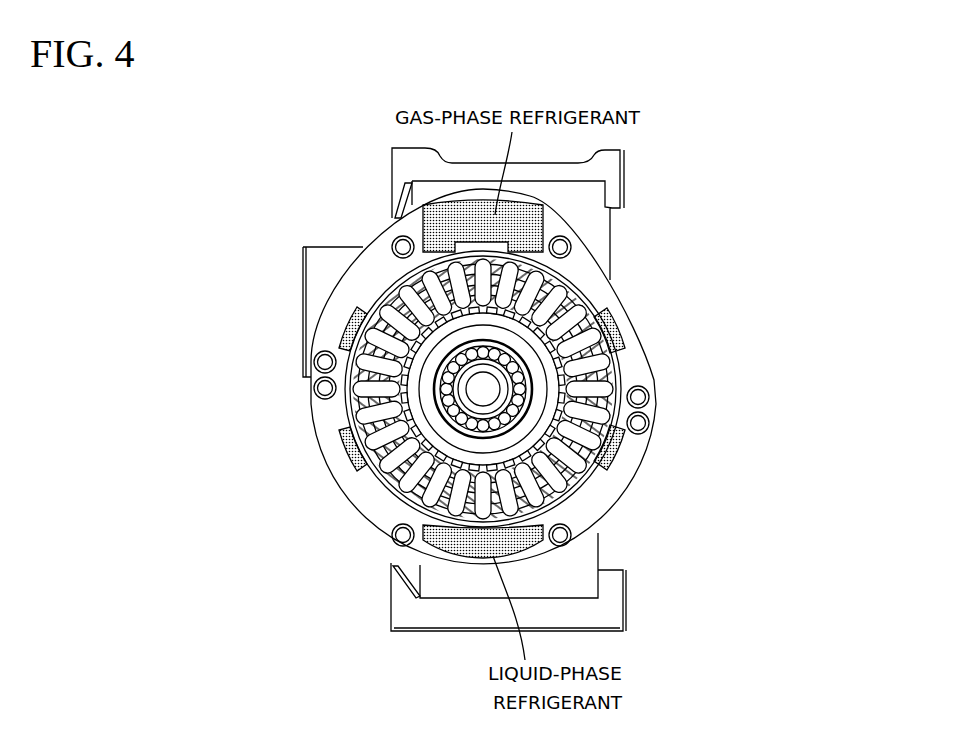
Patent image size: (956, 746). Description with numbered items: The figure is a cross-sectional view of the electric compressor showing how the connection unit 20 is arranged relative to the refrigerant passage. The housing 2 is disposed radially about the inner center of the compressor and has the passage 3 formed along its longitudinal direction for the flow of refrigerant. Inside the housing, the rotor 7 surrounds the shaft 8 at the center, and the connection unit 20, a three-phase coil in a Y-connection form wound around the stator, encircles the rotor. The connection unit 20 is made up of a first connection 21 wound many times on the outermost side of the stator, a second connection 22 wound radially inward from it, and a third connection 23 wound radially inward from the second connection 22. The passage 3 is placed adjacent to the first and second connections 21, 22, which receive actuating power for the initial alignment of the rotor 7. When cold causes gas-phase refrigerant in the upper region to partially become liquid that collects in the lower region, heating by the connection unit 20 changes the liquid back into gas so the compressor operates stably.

The housing 2 is at (620, 312).
The passage 3 is at (620, 457).
The rotor 7 is at (510, 337).
The shaft 8 is at (482, 389).
The connection unit 20 is at (563, 497).
The first connection 21 is at (396, 505).
The second connection 22 is at (377, 473).
The third connection 23 is at (352, 467).